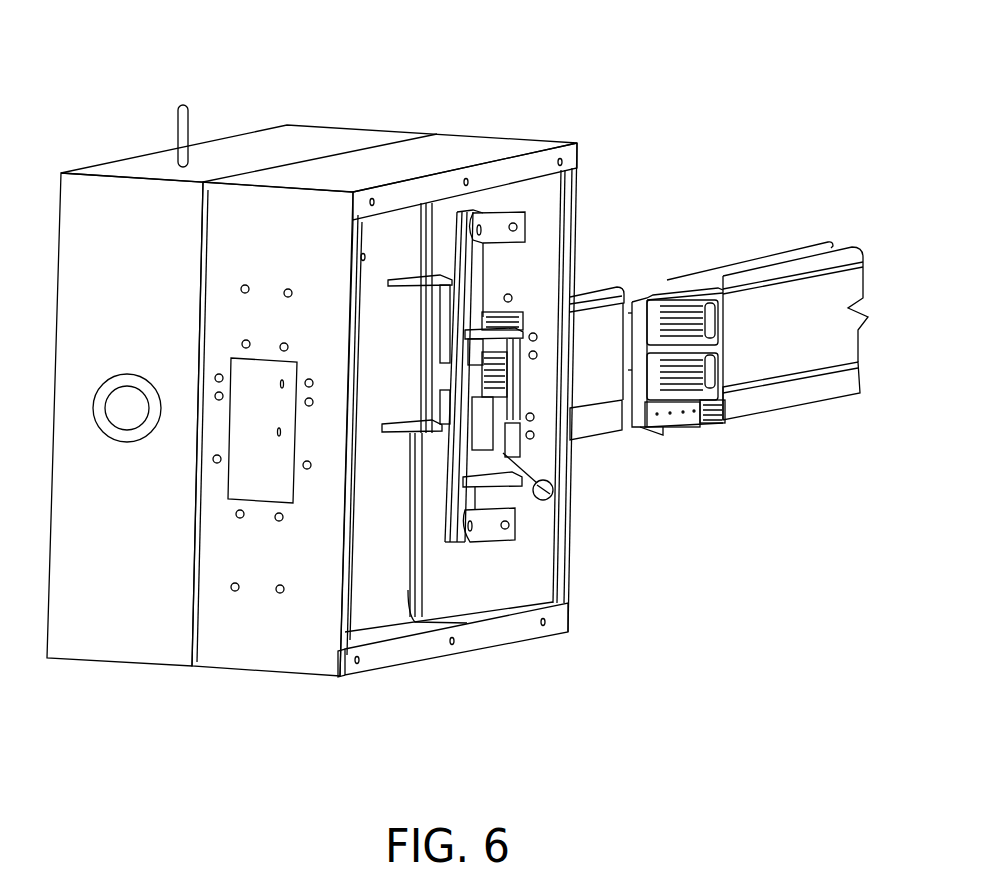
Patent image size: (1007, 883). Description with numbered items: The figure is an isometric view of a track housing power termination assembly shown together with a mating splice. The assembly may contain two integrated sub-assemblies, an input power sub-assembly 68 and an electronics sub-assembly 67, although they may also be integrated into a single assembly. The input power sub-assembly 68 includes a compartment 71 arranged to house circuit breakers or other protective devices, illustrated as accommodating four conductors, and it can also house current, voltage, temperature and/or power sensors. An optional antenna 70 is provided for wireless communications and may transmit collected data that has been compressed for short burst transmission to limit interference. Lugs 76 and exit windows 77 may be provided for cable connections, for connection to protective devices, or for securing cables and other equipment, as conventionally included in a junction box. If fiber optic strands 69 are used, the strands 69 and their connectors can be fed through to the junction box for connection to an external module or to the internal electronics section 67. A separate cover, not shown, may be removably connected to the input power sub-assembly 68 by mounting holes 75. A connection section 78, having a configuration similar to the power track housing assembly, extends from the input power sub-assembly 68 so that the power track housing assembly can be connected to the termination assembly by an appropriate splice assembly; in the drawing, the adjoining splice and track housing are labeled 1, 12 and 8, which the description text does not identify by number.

The busbar rail 1 is at (777, 312).
The lower flange of busbar rail 8 is at (787, 413).
The connector 12 is at (688, 413).
The electronics sub-assembly 67 is at (242, 148).
The input power sub-assembly 68 is at (483, 153).
The fiber optic strand 69 is at (549, 495).
The antenna 70 is at (180, 125).
The compartment 71 is at (387, 238).
The mounting holes 75 is at (452, 643).
The lugs 76 is at (388, 432).
The exit windows 77 is at (125, 412).
The connection section 78 is at (600, 330).